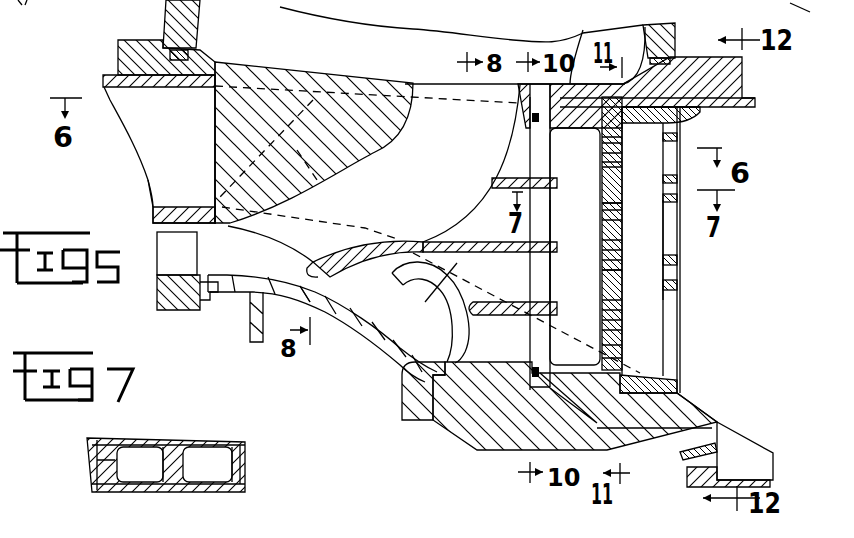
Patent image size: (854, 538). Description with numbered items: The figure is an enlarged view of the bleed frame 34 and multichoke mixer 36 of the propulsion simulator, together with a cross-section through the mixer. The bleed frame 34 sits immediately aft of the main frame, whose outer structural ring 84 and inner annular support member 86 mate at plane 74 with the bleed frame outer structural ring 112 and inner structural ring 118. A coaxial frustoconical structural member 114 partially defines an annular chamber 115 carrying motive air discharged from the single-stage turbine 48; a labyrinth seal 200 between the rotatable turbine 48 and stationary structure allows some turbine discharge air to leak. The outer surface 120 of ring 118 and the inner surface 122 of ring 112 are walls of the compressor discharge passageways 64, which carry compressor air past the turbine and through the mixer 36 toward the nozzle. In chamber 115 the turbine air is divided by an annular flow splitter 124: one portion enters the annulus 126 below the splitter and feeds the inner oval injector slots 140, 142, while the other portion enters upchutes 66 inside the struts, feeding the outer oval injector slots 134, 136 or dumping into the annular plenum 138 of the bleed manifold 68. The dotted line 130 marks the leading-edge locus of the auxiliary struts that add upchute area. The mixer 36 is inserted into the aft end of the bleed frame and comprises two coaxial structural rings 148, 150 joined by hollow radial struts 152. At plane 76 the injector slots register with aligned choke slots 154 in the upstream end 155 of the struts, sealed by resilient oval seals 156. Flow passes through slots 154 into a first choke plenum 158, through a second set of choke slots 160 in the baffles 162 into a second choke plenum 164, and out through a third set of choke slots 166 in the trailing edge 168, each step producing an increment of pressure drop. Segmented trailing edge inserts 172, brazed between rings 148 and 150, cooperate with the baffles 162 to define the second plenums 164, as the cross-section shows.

In FIG. 5, the turbine bleed frame 34 is at (455, 0).
In FIG. 5, the multichoke mixer 36 is at (711, 33).
In FIG. 5, the single-stage turbine 48 is at (184, 259).
In FIG. 5, the passageways 64 is at (178, 160).
In FIG. 5, the upchutes 66 is at (417, 194).
In FIG. 5, the bleed manifold 68 is at (162, 20).
In FIG. 5, the plane 74 is at (215, 117).
In FIG. 5, the plane 76 is at (532, 149).
In FIG. 5, the outer structural ring 84 is at (128, 88).
In FIG. 5, the inner annular support member 86 is at (192, 183).
In FIG. 5, the outer structural ring 112 is at (304, 75).
In FIG. 5, the frustoconical structural member 114 is at (355, 330).
In FIG. 5, the annular chamber 115 is at (284, 271).
In FIG. 5, the inner structural ring 118 is at (224, 236).
In FIG. 5, the outer surface 120 is at (322, 208).
In FIG. 5, the inner surface 122 is at (443, 105).
In FIG. 5, the annular flow splitter 124 is at (368, 270).
In FIG. 5, the annulus 126 is at (398, 314).
In FIG. 5, the dotted line 130 is at (322, 183).
In FIG. 5, the outer oval injector slot 134 is at (513, 155).
In FIG. 5, the outer oval injector slot 136 is at (480, 205).
In FIG. 5, the annular plenum 138 is at (443, 65).
In FIG. 5, the inner oval injector slot 140 is at (428, 298).
In FIG. 5, the inner oval injector slot 142 is at (717, 428).
In FIG. 5, the structural ring 148 is at (756, 103).
In FIG. 5, the structural ring 150 is at (660, 408).
In FIG. 5, the hollow radial struts 152 is at (699, 42).
In FIG. 5, the choke slots 154 is at (548, 186).
In FIG. 7, the choke slots 154 is at (114, 456).
In FIG. 5, the upstream end 155 is at (550, 248).
In FIG. 7, the upstream end 155 is at (95, 450).
In FIG. 5, the resilient oval seals 156 is at (528, 120).
In FIG. 7, the first choke plenum 158 is at (135, 470).
In FIG. 5, the choke slots 160 is at (623, 205).
In FIG. 5, the baffles 162 is at (622, 247).
In FIG. 5, the second choke plenum 164 is at (656, 190).
In FIG. 7, the second choke plenum 164 is at (205, 470).
In FIG. 5, the choke slots 166 is at (683, 299).
In FIG. 7, the choke slots 166 is at (247, 465).
In FIG. 5, the trailing edge 168 is at (680, 258).
In FIG. 5, the trailing edge inserts 172 is at (683, 274).
In FIG. 7, the trailing edge inserts 172 is at (213, 442).
In FIG. 5, the labyrinth seal 200 is at (222, 302).